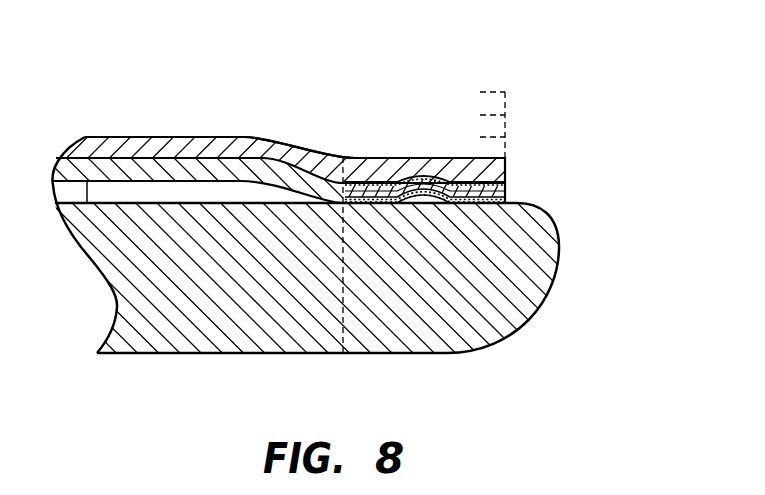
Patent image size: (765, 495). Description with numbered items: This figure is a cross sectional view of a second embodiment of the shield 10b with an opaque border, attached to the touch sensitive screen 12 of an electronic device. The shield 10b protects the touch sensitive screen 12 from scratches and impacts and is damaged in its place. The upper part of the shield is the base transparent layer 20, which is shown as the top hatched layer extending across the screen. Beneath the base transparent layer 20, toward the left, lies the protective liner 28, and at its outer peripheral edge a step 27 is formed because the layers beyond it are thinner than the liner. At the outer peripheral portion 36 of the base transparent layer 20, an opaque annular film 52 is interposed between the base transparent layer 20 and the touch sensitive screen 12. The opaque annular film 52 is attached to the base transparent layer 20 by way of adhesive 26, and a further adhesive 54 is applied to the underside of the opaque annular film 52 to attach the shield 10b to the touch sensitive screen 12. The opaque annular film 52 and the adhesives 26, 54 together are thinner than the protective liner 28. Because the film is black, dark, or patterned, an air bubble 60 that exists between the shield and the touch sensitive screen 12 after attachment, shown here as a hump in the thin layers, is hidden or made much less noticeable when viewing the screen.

The shield 10b is at (595, 155).
The touch sensitive screen 12 is at (595, 203).
The base transparent layer 20 is at (163, 145).
The adhesive 26 is at (383, 182).
The step 27 is at (354, 156).
The protective liner 28 is at (88, 205).
The outer peripheral portion 36 is at (429, 210).
The opaque annular film 52 is at (410, 187).
The adhesive 54 is at (460, 181).
The air bubble 60 is at (427, 200).